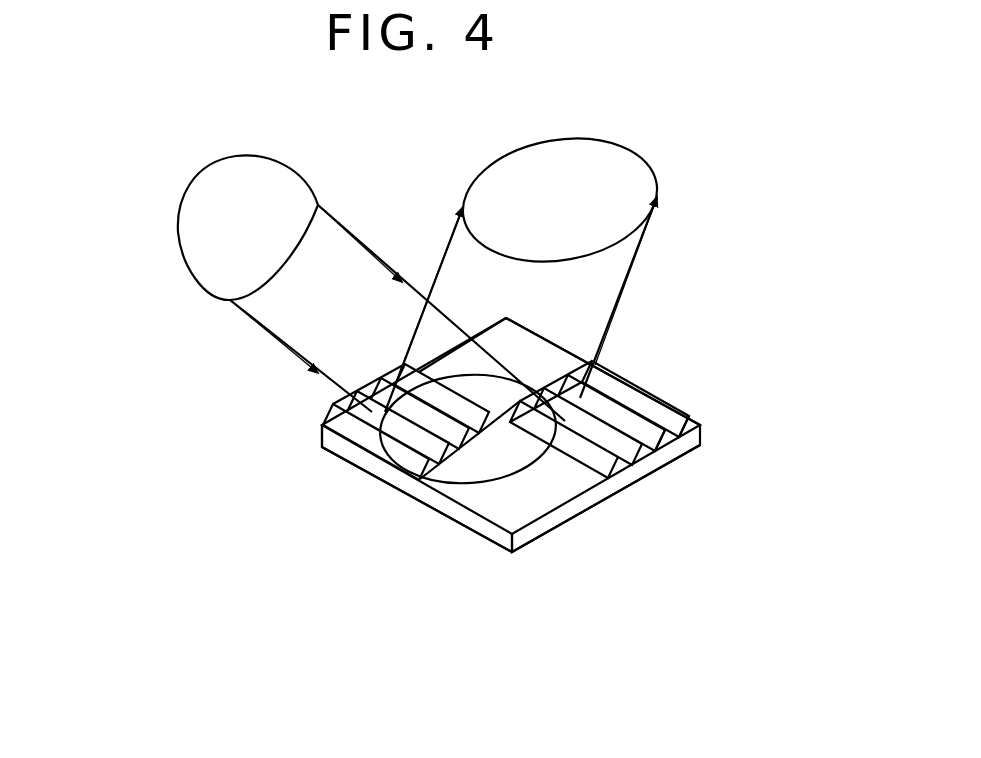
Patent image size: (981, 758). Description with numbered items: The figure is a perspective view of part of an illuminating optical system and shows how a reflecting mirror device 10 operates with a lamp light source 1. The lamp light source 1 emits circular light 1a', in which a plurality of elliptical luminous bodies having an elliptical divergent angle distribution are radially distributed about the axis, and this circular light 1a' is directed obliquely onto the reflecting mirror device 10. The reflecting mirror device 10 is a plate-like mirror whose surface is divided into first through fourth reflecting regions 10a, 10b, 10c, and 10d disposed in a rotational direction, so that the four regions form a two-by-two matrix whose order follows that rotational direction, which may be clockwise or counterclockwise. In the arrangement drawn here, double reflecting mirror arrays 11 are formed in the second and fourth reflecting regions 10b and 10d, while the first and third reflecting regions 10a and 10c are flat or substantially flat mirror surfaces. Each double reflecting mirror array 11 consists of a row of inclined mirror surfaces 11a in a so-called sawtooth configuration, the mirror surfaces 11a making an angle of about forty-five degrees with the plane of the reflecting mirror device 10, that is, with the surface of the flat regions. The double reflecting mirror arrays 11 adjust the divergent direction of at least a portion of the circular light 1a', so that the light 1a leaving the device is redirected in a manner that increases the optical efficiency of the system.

The lamp light source 1 is at (155, 226).
The light reflected from the reflecting mirror device 1a is at (556, 268).
The circular light 1a' is at (362, 313).
The reflecting mirror device 10 is at (493, 574).
The first reflecting region 10a is at (529, 355).
The second reflecting region 10b is at (352, 425).
The third reflecting region 10c is at (531, 504).
The fourth reflecting region 10d is at (631, 384).
The double reflecting mirror arrays 11 is at (681, 420).
The mirror surfaces 11a is at (688, 430).